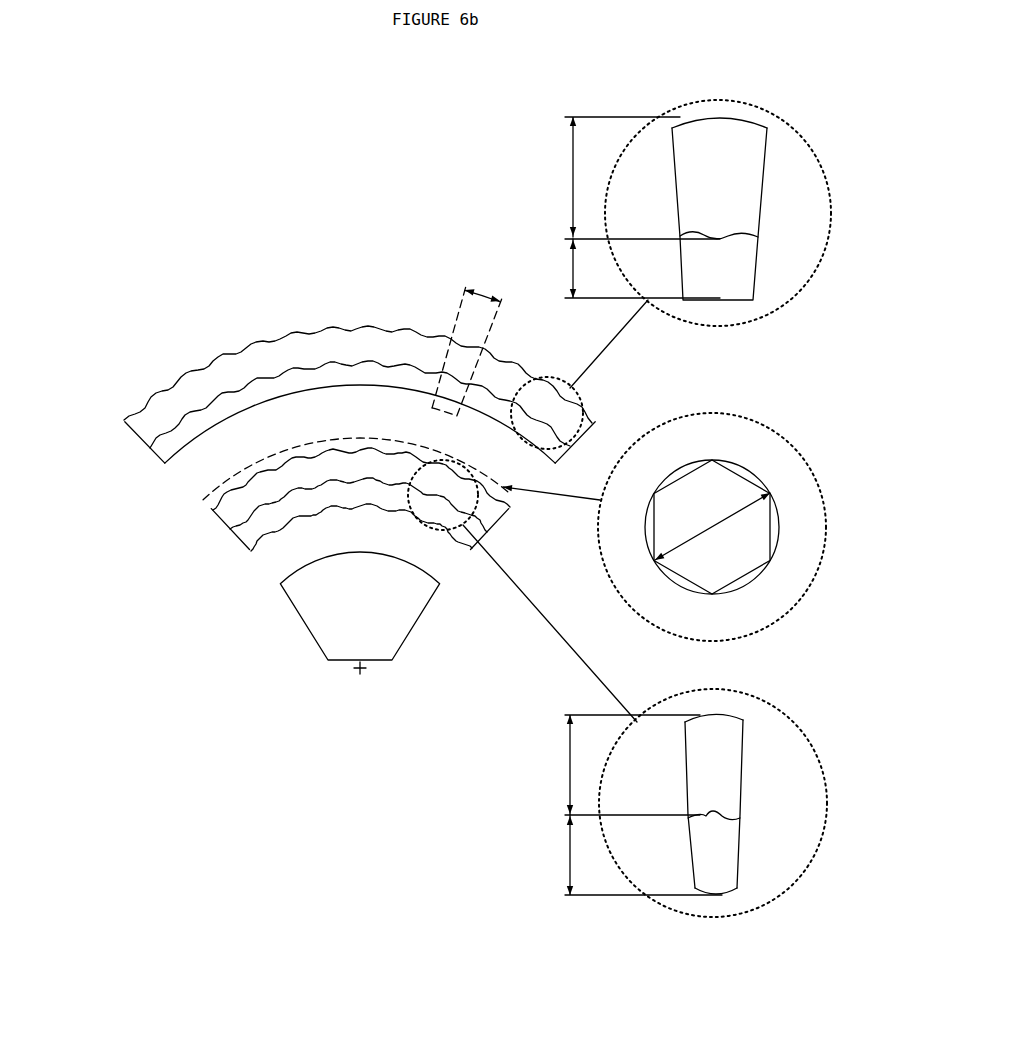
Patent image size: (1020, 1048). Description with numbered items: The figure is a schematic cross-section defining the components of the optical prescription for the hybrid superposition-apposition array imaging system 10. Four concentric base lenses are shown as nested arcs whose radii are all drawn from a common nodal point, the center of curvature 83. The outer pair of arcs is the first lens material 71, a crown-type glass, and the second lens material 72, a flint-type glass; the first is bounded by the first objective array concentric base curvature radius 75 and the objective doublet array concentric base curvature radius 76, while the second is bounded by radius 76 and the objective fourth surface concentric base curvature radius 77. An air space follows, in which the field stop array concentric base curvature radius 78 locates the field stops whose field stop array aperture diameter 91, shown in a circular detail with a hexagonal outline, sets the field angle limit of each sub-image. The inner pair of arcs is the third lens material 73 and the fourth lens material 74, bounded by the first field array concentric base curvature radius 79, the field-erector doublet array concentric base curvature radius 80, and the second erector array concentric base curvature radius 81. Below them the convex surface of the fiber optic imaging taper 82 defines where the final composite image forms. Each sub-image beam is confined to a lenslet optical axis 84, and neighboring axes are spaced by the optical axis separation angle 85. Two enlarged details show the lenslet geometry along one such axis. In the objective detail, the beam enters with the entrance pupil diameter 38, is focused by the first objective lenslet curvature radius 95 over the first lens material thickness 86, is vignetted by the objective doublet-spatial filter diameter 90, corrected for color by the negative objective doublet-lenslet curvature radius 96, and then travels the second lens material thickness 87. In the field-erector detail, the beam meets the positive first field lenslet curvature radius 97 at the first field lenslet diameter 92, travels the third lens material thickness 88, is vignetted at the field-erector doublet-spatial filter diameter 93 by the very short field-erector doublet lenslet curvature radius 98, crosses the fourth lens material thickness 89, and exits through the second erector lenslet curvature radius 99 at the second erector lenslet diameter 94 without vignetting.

The hybrid superposition-apposition array imaging system 10 is at (150, 296).
The entrance pupil diameter 38 is at (672, 128).
The first lens material 71 is at (140, 430).
The second lens material 72 is at (163, 460).
The third lens material 73 is at (217, 518).
The fourth lens material 74 is at (247, 542).
The first objective array concentric base curvature radius 75 is at (360, 668).
The objective doublet array concentric base curvature radius 76 is at (360, 668).
The objective fourth surface concentric base curvature radius 77 is at (360, 668).
The field stop array concentric base curvature radius 78 is at (360, 668).
The first field array concentric base curvature radius 79 is at (360, 668).
The field-erector doublet array concentric base curvature radius 80 is at (360, 668).
The second erector array concentric base curvature radius 81 is at (360, 668).
The fiber optic imaging taper 82 is at (360, 668).
The center of curvature 83 is at (356, 670).
The lenslet optical axis 84 is at (453, 428).
The optical axis separation angle 85 is at (483, 296).
The first lens material thickness 86 is at (573, 178).
The second lens material thickness 87 is at (573, 268).
The third lens material thickness 88 is at (570, 764).
The fourth lens material thickness 89 is at (570, 856).
The objective doublet-spatial filter diameter 90 is at (687, 233).
The field stop array aperture diameter 91 is at (770, 493).
The first field lenslet diameter 92 is at (685, 721).
The field-erector doublet-spatial filter diameter 93 is at (688, 818).
The second erector lenslet diameter 94 is at (695, 890).
The first objective lenslet curvature radius 95 is at (748, 120).
The objective doublet-lenslet curvature radius 96 is at (738, 240).
The first field lenslet curvature radius 97 is at (728, 715).
The field-erector doublet lenslet curvature radius 98 is at (712, 818).
The second erector lenslet curvature radius 99 is at (723, 897).